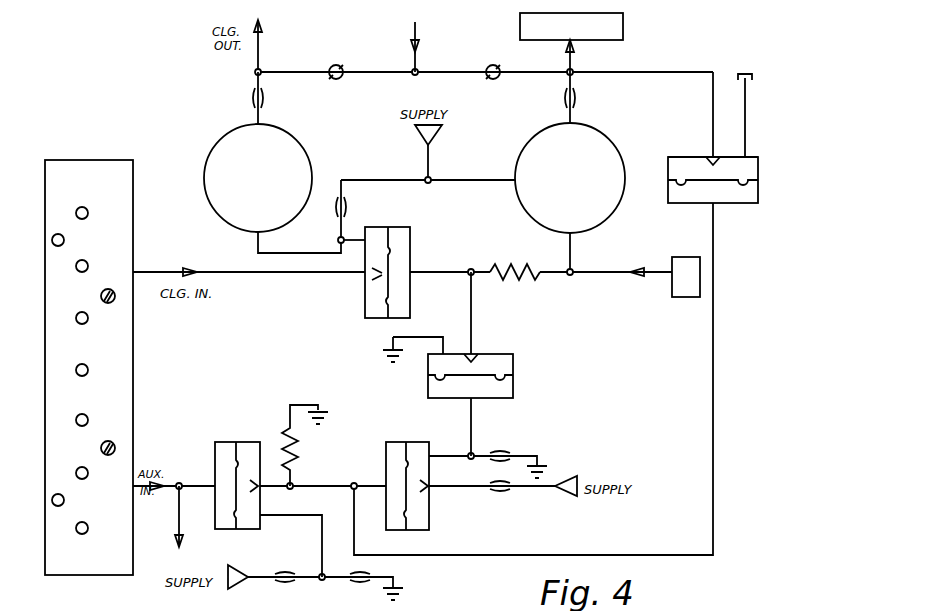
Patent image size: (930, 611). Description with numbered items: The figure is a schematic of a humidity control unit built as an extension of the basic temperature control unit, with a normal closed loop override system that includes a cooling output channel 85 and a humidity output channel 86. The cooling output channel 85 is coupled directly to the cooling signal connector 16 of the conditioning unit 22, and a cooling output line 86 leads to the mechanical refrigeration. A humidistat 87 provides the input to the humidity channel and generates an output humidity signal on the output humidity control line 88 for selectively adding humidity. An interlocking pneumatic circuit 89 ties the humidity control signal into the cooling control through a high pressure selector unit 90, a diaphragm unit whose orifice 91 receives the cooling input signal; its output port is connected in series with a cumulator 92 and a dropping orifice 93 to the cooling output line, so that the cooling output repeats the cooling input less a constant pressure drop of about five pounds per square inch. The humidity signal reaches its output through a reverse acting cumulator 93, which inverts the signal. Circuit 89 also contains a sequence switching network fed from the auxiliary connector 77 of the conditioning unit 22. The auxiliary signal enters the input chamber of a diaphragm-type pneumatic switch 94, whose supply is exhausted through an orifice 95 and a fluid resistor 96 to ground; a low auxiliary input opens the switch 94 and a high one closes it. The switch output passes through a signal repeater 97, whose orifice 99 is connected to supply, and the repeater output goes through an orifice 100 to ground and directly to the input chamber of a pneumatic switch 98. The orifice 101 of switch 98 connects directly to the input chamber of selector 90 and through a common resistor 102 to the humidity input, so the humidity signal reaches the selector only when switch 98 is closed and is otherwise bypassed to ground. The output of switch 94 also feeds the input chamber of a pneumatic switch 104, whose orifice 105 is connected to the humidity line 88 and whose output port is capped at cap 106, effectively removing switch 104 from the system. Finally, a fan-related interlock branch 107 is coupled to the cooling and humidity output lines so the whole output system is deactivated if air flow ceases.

The cooling signal connector 16 is at (88, 320).
The conditioning unit 22 is at (133, 375).
The auxiliary connector 77 is at (88, 418).
The cooling output channel 85 is at (485, 92).
The humidity output channel 86 is at (262, 52).
The humidistat 87 is at (693, 297).
The output humidity control line 88 is at (575, 63).
The interlocking pneumatic circuit 89 is at (450, 294).
The high pressure selector unit 90 is at (365, 308).
The orifice 91 is at (368, 278).
The cumulator 92 is at (258, 152).
The dropping orifice 93 is at (255, 98).
The pneumatic switch 94 is at (250, 440).
The orifice 95 is at (258, 483).
The fluid resistor 96 is at (295, 465).
The signal repeater 97 is at (422, 531).
The orifice 99 is at (430, 482).
The pneumatic switch 98 is at (513, 383).
The orifice 100 is at (498, 450).
The orifice 101 is at (478, 358).
The common resistor 102 is at (530, 266).
The pneumatic switch 104 is at (683, 157).
The orifice 105 is at (713, 180).
The cap 106 is at (752, 76).
The fan-related interlock branch 107 is at (432, 70).